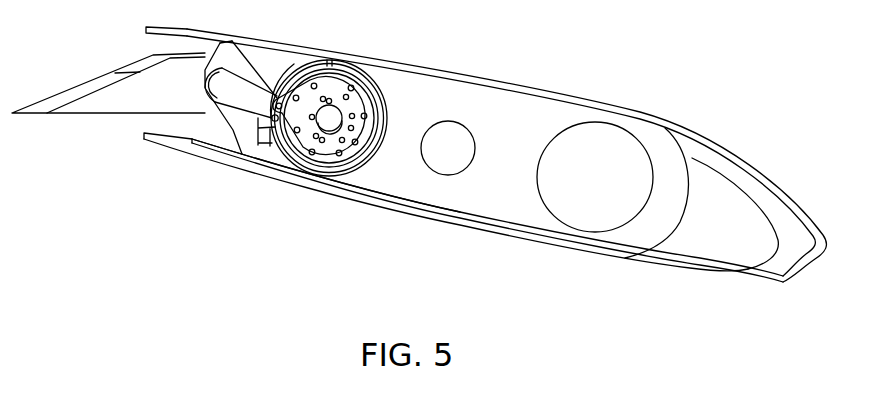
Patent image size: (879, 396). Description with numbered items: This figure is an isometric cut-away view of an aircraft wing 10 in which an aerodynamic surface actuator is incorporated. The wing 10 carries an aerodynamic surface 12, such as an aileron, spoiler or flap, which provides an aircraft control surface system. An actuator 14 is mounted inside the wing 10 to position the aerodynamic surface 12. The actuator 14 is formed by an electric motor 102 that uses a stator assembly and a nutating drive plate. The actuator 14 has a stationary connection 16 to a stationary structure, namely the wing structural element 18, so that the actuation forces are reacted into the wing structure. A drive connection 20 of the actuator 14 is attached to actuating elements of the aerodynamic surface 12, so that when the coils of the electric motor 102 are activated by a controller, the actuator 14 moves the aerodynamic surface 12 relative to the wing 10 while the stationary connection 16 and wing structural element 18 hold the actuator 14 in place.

The aircraft wing 10 is at (430, 66).
The aerodynamic surface 12 is at (117, 108).
The actuator 14 is at (344, 157).
The stationary connection 16 is at (273, 118).
The wing structural element 18 is at (252, 171).
The drive connection 20 is at (298, 62).
The electric motor 102 is at (401, 104).